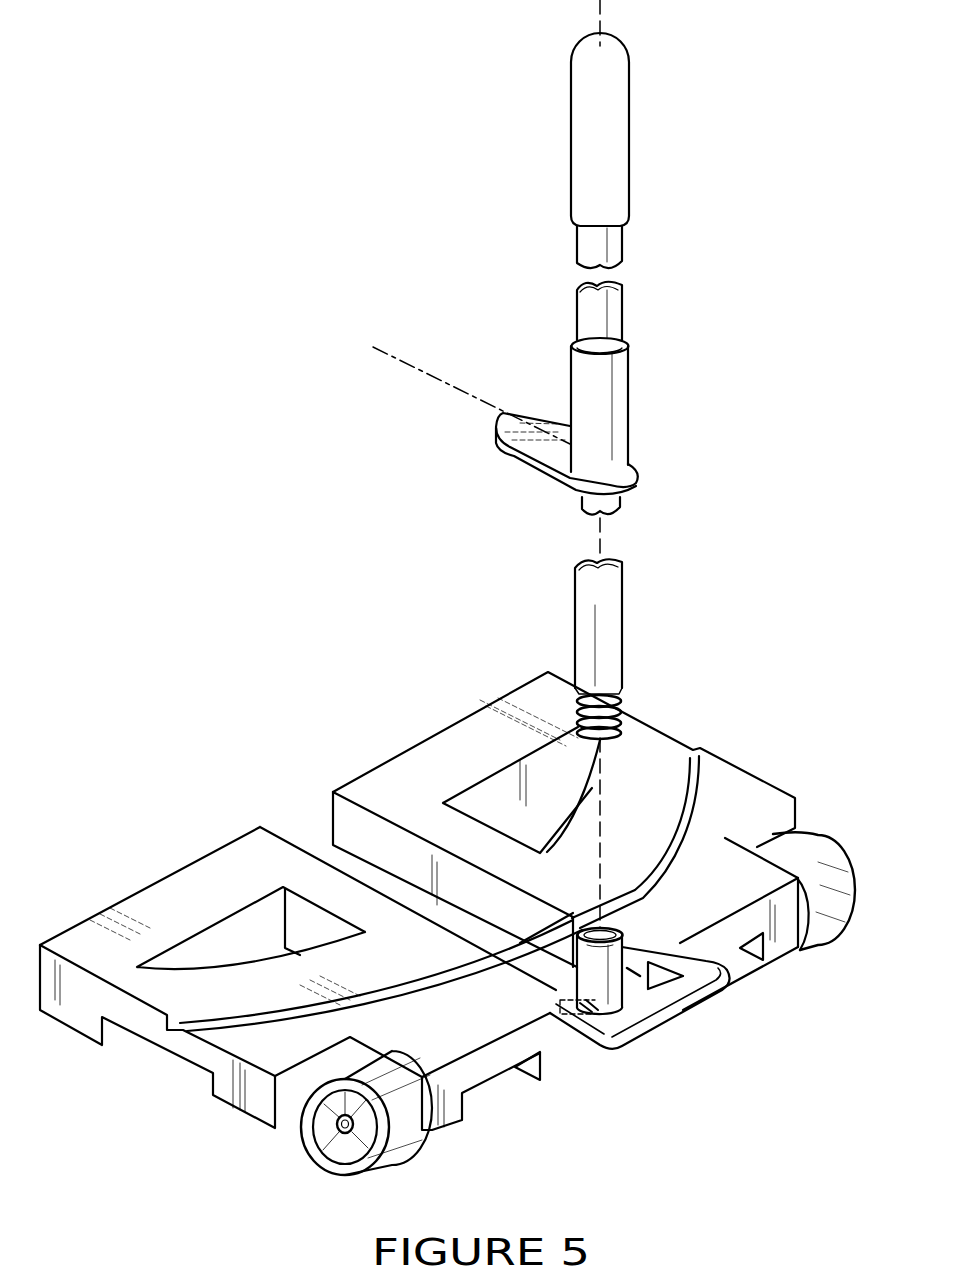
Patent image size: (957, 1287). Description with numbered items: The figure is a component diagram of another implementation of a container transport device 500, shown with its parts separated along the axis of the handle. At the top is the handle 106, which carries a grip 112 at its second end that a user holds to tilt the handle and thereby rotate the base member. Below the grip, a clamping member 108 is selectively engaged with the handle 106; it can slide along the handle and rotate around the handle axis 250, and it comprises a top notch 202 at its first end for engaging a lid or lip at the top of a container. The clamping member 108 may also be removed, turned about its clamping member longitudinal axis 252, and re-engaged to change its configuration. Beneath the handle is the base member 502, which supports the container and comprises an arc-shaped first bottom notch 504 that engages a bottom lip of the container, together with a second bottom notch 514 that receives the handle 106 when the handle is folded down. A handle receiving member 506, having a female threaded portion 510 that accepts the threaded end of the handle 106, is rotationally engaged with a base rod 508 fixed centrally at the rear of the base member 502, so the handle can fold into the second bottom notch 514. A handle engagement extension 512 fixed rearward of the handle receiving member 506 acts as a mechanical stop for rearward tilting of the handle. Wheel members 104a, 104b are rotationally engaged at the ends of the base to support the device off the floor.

The container transport device 500 is at (686, 70).
The grip 112 is at (616, 153).
The handle 106 is at (612, 318).
The clamping member 108 is at (534, 412).
The top notch 202 is at (513, 455).
The clamping member longitudinal axis 252 is at (472, 406).
The handle axis 250 is at (612, 770).
The base member 502 is at (420, 745).
The first bottom notch 504 is at (698, 746).
The second bottom notch 514 is at (320, 830).
The threaded portion 510 is at (613, 924).
The handle engagement extension 512 is at (724, 984).
The handle receiving member 506 is at (617, 987).
The base rod 508 is at (593, 1023).
The wheel member 104a is at (403, 1153).
The wheel member 104b is at (830, 930).